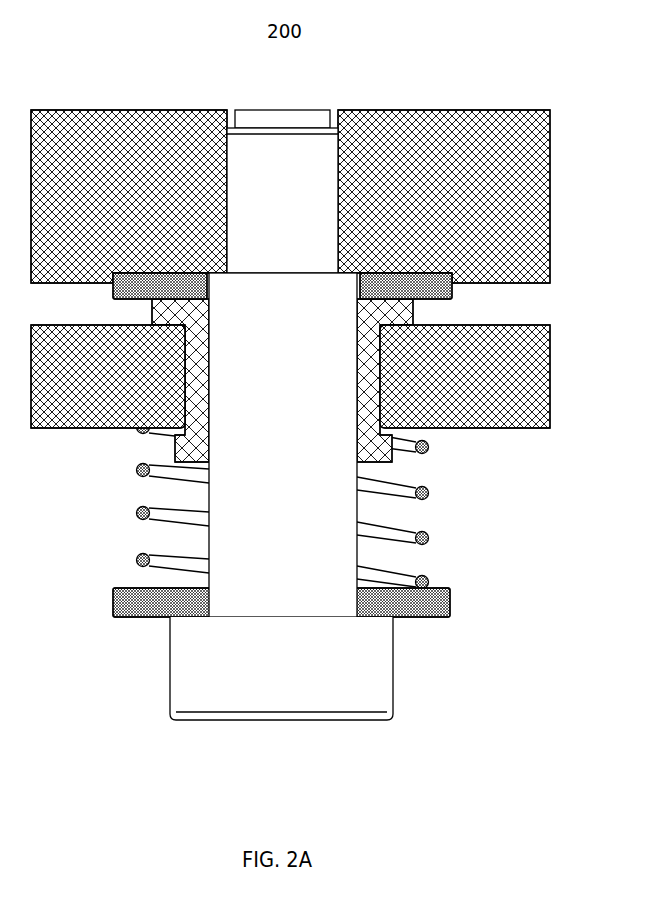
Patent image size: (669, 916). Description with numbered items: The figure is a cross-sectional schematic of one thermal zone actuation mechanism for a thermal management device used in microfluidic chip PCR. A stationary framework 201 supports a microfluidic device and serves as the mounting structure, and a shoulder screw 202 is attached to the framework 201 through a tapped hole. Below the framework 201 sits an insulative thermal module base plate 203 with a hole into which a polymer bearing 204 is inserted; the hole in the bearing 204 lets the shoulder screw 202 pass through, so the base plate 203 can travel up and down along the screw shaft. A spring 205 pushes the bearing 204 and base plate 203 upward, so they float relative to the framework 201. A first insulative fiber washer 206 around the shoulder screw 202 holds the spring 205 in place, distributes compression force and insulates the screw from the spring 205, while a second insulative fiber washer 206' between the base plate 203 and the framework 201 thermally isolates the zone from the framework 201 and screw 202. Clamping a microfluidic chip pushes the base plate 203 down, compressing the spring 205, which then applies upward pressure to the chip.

The framework 201 is at (290, 196).
The shoulder screw 202 is at (281, 415).
The thermal module base plate 203 is at (290, 376).
The polymer bearing 204 is at (397, 459).
The spring 205 is at (429, 543).
The first insulative fiber washer 206 is at (311, 653).
The second insulative fiber washer 206' is at (260, 387).